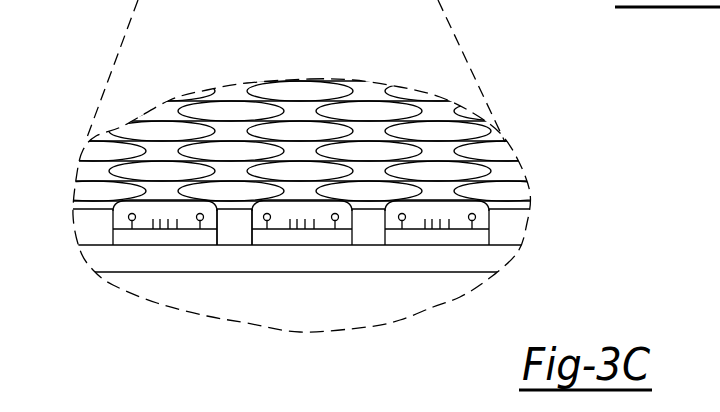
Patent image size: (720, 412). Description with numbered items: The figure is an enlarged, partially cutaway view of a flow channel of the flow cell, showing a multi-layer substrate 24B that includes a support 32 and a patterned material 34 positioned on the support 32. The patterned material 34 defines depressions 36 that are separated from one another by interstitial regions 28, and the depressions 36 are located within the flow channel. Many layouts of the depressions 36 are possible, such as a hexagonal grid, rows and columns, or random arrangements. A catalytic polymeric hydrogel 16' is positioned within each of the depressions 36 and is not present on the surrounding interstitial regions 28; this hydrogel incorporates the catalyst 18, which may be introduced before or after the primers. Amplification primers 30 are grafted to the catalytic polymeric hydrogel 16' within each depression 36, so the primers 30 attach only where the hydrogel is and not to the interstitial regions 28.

The catalytic polymeric hydrogel 16' is at (301, 293).
The catalyst 18 is at (127, 219).
The multi-layer substrate 24B is at (328, 237).
The interstitial regions 28 is at (236, 208).
The amplification primer 30 is at (449, 225).
The support 32 is at (160, 255).
The patterned material 34 is at (231, 233).
The depressions 36 is at (298, 204).